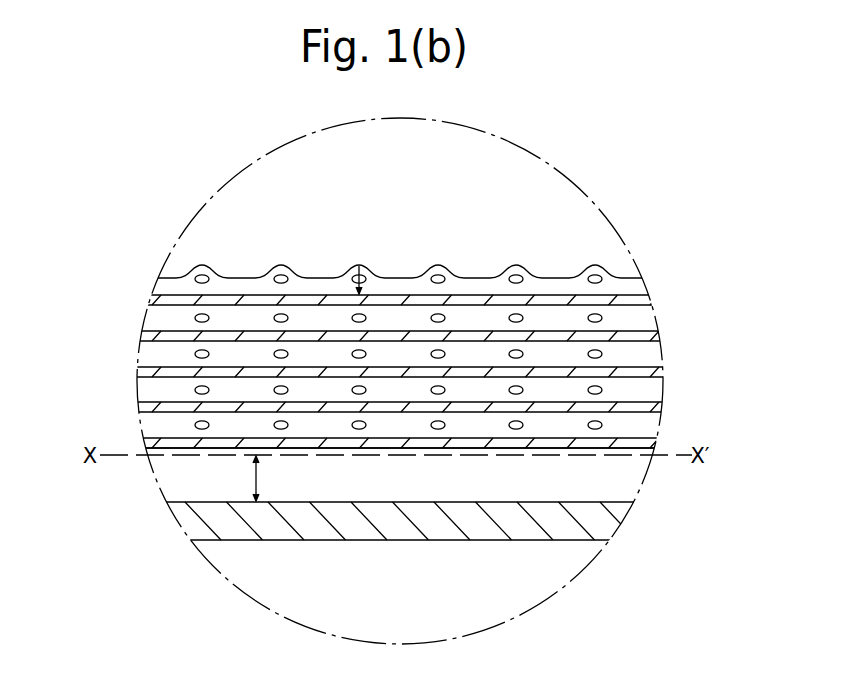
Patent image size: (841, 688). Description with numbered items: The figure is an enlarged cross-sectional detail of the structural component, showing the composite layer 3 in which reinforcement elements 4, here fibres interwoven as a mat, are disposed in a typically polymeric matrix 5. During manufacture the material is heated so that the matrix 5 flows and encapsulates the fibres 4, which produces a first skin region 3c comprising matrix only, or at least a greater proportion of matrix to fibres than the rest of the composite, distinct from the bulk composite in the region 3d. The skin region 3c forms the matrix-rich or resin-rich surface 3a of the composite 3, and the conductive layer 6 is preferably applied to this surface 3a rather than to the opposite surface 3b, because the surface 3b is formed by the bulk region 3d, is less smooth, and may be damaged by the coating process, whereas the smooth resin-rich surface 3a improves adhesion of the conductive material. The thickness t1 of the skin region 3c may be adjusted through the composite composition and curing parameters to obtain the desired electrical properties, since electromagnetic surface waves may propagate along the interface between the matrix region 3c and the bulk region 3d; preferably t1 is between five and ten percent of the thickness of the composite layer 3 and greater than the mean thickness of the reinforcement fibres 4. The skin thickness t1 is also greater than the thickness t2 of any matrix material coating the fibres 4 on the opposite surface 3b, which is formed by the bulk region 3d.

The composite layer 3 is at (76, 265).
The matrix-rich surface 3a is at (198, 502).
The opposite surface 3b is at (559, 277).
The first skin region 3c is at (131, 461).
The bulk region 3d is at (131, 265).
The reinforcement elements 4 is at (651, 334).
The matrix 5 is at (618, 478).
The conductive layer 6 is at (597, 524).
The thickness of the skin region t1 is at (255, 476).
The thickness of matrix material coating the fibres t2 is at (359, 262).